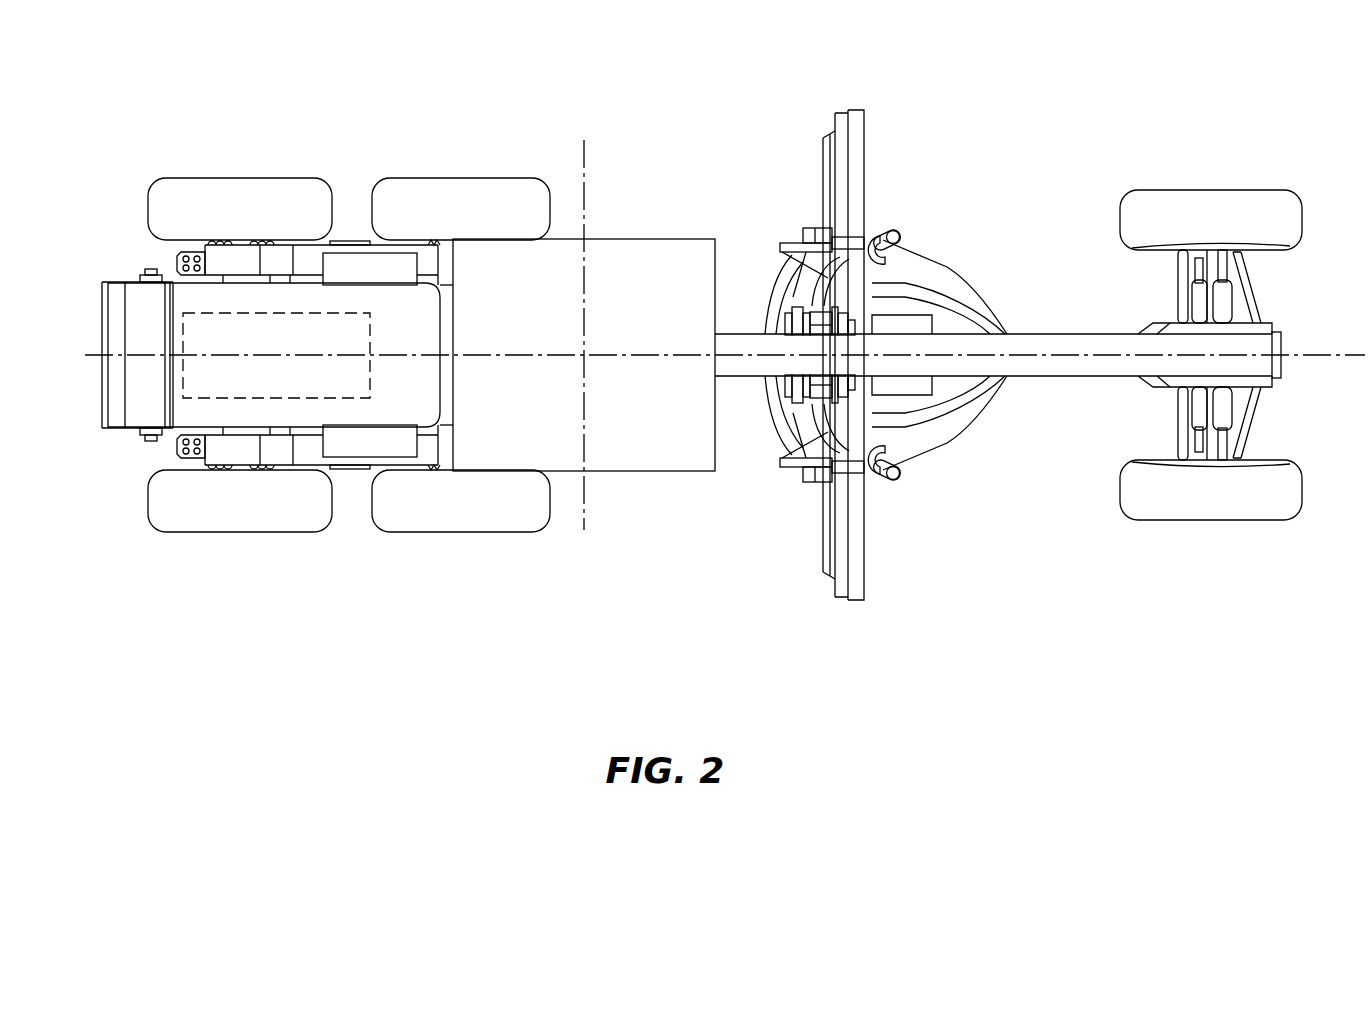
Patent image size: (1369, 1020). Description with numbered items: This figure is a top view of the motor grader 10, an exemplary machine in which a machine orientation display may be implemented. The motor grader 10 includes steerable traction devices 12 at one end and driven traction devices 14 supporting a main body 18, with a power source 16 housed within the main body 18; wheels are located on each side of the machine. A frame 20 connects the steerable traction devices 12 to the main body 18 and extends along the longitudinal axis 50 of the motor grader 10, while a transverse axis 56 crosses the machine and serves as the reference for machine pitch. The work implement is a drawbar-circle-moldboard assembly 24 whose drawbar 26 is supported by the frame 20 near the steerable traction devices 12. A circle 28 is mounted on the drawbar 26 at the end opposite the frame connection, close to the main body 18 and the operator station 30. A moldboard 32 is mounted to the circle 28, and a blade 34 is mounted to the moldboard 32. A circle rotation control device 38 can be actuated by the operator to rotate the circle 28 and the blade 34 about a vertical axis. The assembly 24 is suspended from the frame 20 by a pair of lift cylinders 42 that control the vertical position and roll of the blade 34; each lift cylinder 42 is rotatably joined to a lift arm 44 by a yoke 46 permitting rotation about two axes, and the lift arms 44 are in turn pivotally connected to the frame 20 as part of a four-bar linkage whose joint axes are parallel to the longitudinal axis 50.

The motor grader 10 is at (665, 129).
The steerable traction devices 12 is at (1212, 192).
The driven traction devices 14 is at (244, 192).
The power source 16 is at (185, 386).
The main body 18 is at (142, 307).
The frame 20 is at (1074, 340).
The drawbar-circle-moldboard (DCM) assembly 24 is at (978, 428).
The drawbar 26 is at (994, 326).
The circle 28 is at (790, 298).
The operator station 30 is at (626, 238).
The moldboard 32 is at (790, 461).
The blade 34 is at (866, 133).
The circle rotation control device 38 is at (913, 322).
The lift cylinders 42 is at (898, 236).
The lift arm 44 is at (825, 278).
The yoke 46 is at (868, 237).
The longitudinal axis 50 is at (1300, 346).
The transverse axis 56 is at (582, 166).